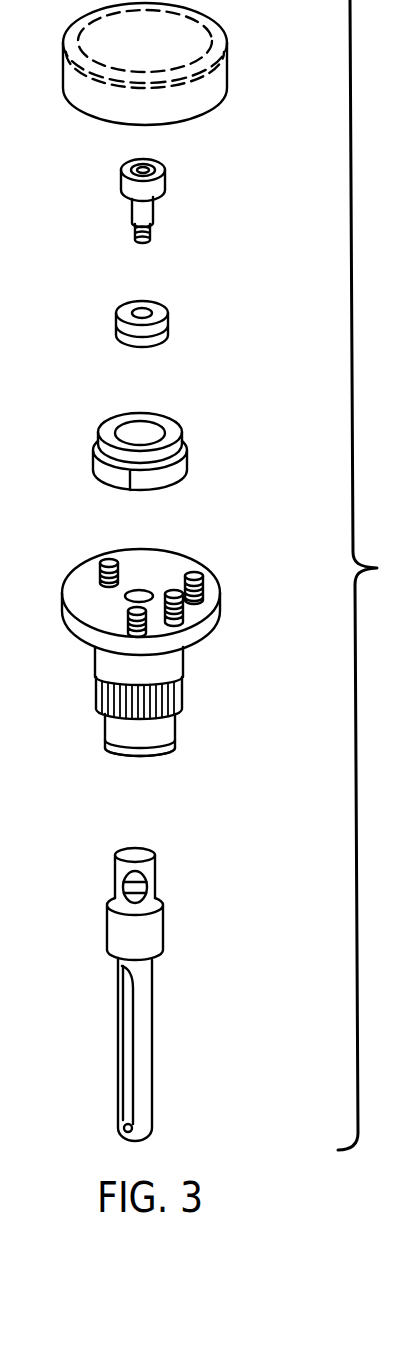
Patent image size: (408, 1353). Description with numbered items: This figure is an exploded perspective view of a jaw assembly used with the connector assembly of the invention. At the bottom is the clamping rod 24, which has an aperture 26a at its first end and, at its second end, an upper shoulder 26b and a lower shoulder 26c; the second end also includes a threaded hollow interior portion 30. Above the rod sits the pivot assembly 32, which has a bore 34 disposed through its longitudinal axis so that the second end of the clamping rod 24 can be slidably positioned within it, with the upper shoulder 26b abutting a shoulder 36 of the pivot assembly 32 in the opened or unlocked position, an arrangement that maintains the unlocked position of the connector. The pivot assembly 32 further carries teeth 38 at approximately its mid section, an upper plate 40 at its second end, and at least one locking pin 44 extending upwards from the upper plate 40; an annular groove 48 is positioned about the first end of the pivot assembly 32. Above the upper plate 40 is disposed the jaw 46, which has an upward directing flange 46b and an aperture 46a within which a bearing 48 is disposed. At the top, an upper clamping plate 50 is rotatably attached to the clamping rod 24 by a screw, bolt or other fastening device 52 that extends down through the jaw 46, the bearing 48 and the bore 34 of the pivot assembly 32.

The upper clamping plate 50 is at (225, 62).
The fastening device 52 is at (153, 207).
The bearing 48 is at (168, 308).
The jaw 46 is at (137, 429).
The aperture 46a is at (146, 430).
The upward directing flange 46b is at (100, 437).
The upper plate 40 is at (168, 580).
The bore 34 is at (166, 565).
The locking pin 44 is at (200, 590).
The teeth 38 is at (183, 681).
The pivot assembly 32 is at (105, 727).
The shoulder 36 is at (168, 753).
The threaded hollow interior portion 30 is at (130, 877).
The upper shoulder 26b is at (112, 900).
The lower shoulder 26c is at (110, 948).
The clamping rod 24 is at (136, 1066).
The aperture 26a is at (124, 1133).